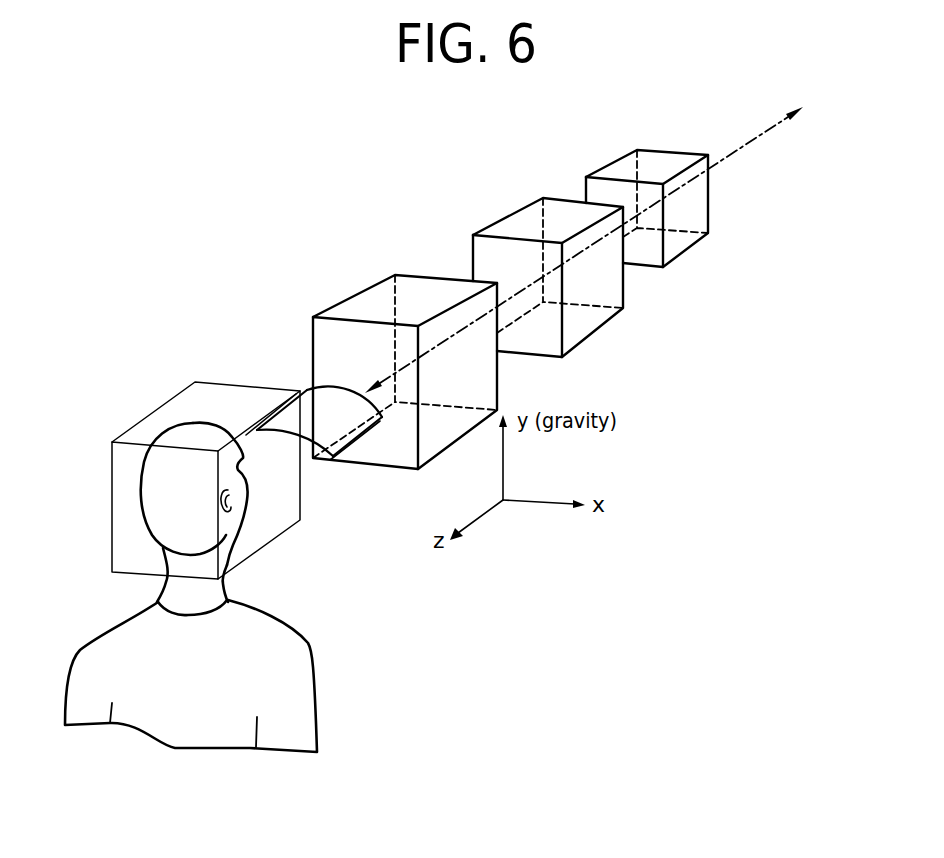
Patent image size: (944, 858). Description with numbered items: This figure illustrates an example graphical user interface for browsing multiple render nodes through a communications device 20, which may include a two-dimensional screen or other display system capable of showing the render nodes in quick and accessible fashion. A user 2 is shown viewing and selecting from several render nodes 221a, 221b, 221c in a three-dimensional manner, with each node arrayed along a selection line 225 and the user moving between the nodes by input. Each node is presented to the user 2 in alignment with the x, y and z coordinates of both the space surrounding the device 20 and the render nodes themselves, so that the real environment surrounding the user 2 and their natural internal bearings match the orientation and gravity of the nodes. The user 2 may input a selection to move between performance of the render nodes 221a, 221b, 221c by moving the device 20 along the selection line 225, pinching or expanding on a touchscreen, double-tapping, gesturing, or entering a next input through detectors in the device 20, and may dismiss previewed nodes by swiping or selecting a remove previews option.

The user 2 is at (288, 677).
The communications device 20 is at (298, 423).
The render node 221a is at (377, 307).
The render node 221b is at (518, 227).
The render node 221c is at (690, 215).
The selection line 225 is at (743, 147).